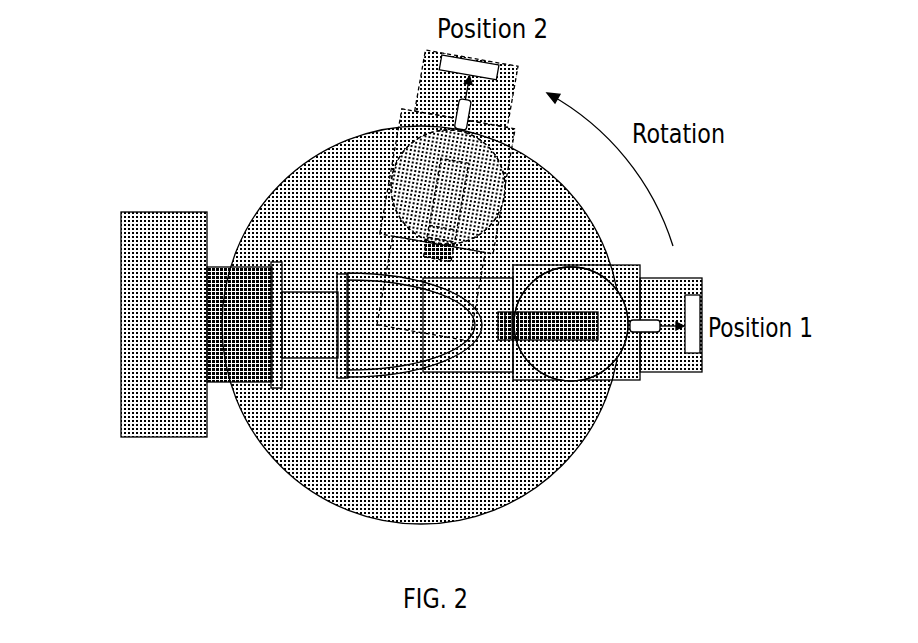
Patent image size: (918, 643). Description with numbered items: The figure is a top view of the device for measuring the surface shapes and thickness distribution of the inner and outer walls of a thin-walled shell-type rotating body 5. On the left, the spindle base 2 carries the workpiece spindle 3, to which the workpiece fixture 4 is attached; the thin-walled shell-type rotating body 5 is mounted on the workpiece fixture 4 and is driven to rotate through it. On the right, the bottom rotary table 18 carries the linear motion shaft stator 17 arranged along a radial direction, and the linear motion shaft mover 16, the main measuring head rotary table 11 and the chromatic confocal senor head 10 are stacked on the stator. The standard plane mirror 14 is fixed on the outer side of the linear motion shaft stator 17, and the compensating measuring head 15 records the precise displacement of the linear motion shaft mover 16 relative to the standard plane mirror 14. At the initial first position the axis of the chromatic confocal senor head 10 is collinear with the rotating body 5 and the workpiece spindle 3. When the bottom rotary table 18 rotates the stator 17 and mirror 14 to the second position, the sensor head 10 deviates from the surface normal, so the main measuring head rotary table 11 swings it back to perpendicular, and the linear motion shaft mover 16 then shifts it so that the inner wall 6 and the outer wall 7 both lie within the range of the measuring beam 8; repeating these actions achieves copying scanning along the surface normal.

The spindle base 2 is at (133, 318).
The workpiece spindle 3 is at (226, 285).
The workpiece fixture 4 is at (310, 318).
The thin-walled shell-type rotating body 5 is at (343, 290).
The inner wall of the thin-walled shell-type rotating body 6 is at (353, 270).
The outer wall of the thin-walled shell-type rotating body 7 is at (372, 272).
The measuring beam 8 is at (490, 332).
The chromatic confocal senor head 10 is at (550, 340).
The main measuring head rotary table 11 is at (590, 365).
The standard plane mirror 14 is at (700, 293).
The compensating measuring head 15 is at (650, 331).
The linear motion shaft mover 16 is at (623, 382).
The linear motion shaft stator 17 is at (702, 366).
The bottom rotary table 18 is at (313, 472).